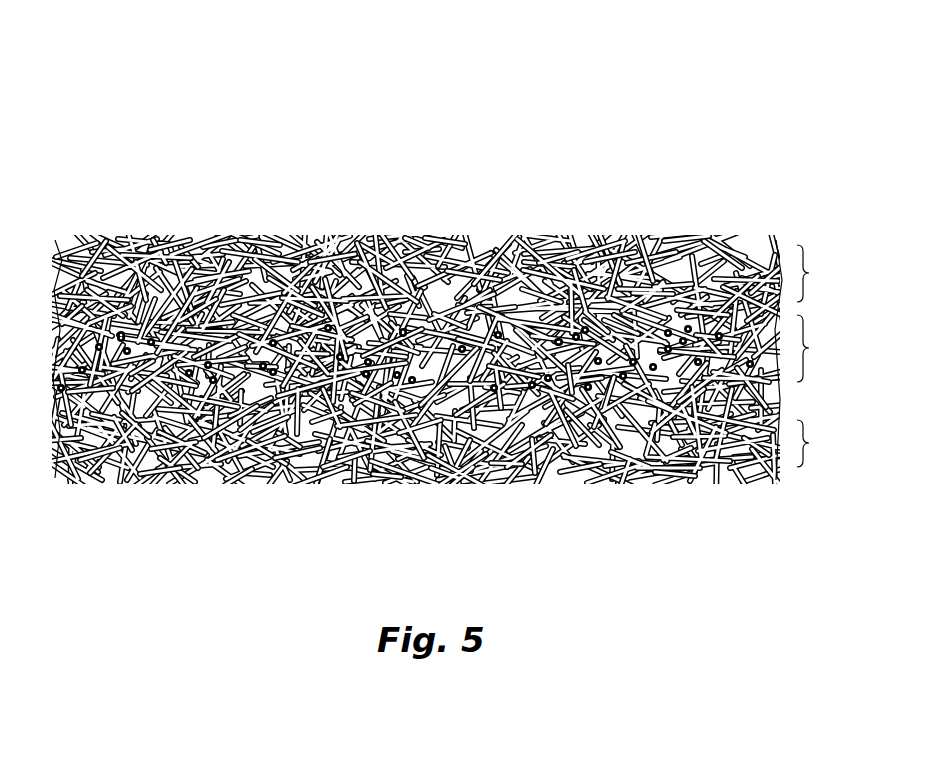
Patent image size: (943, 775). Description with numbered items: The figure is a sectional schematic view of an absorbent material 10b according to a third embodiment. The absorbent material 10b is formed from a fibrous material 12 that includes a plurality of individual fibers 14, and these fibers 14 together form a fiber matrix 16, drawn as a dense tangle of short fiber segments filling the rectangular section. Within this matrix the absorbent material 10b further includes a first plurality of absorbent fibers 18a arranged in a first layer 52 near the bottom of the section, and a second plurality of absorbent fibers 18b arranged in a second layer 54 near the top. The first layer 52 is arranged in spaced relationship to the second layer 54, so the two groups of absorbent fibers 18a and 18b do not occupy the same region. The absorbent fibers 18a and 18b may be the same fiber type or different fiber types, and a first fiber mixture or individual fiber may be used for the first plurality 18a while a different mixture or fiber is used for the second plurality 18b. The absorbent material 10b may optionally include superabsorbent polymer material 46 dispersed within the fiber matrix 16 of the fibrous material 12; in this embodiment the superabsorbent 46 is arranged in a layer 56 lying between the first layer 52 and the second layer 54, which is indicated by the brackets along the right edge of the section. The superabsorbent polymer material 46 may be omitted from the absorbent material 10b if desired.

The absorbent material 10b is at (180, 86).
The fibrous material 12 is at (38, 278).
The individual fibers 14 is at (257, 234).
The fiber matrix 16 is at (165, 245).
The first plurality of absorbent fibers 18a is at (95, 455).
The second plurality of absorbent fibers 18b is at (332, 262).
The superabsorbent polymer material 46 is at (75, 392).
The first layer 52 is at (811, 442).
The second layer 54 is at (811, 270).
The layer of superabsorbent 56 is at (811, 347).